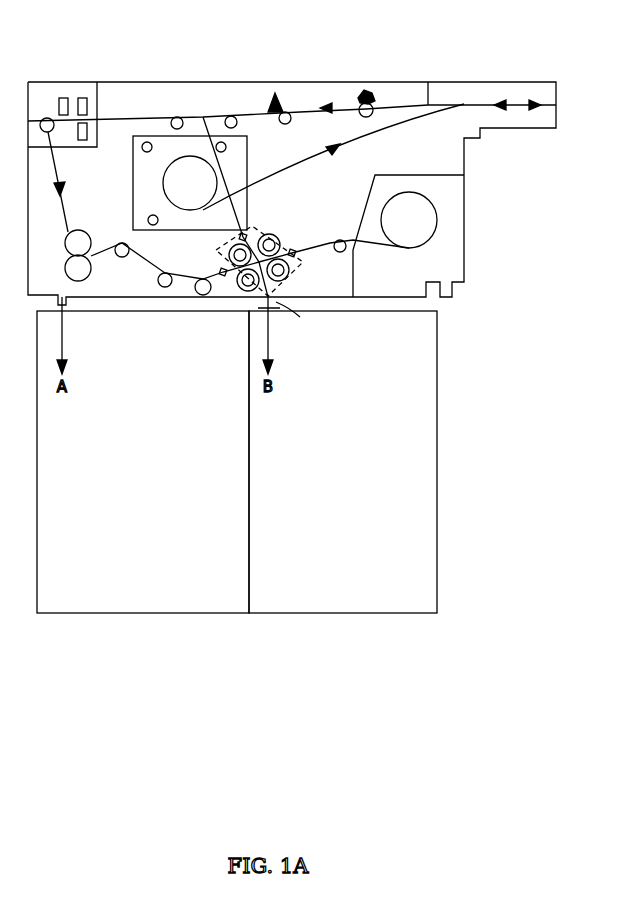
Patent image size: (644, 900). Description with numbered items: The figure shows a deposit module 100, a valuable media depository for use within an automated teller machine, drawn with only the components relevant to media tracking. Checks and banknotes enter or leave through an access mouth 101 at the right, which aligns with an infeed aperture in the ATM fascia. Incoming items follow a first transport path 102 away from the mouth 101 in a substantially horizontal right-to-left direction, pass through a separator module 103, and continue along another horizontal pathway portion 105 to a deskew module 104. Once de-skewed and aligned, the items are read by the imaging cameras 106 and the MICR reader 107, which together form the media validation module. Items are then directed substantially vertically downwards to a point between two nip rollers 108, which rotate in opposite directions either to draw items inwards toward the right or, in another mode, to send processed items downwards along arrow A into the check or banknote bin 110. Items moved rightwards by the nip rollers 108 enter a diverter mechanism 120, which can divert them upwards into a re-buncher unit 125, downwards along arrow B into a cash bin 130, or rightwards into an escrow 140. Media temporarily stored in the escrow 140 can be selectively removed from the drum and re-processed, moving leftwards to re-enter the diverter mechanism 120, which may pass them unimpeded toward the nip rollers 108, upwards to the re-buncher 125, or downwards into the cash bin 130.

The deposit module 100 is at (162, 82).
The access mouth 101 is at (562, 103).
The first transport path 102 is at (428, 82).
The separator module 103 is at (364, 95).
The deskew module 104 is at (275, 92).
The pathway portion 105 is at (203, 117).
The imaging cameras 106 is at (86, 97).
The MICR reader 107 is at (63, 97).
The nip rollers 108 is at (75, 230).
The check or banknote bin 110 is at (133, 491).
The diverter mechanism 120 is at (280, 231).
The re-buncher unit 125 is at (252, 162).
The cash bin 130 is at (321, 491).
The escrow 140 is at (470, 219).